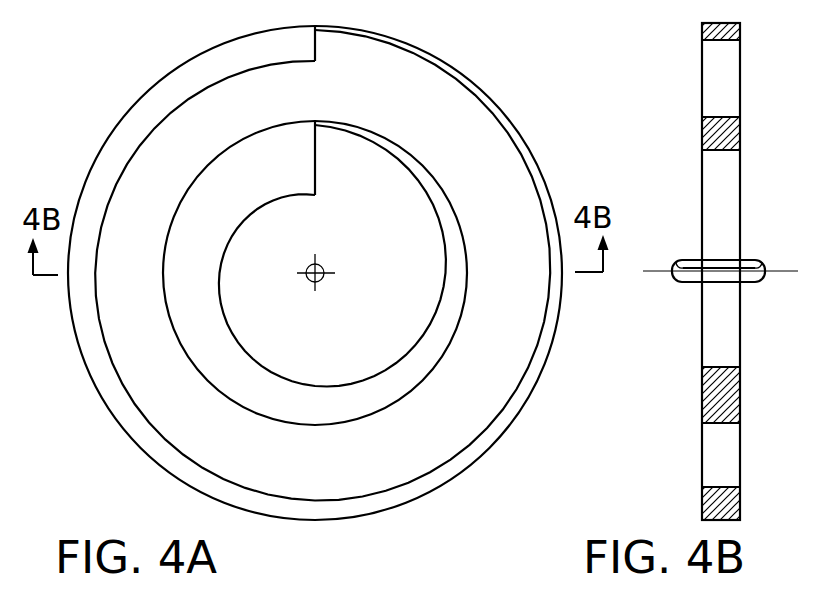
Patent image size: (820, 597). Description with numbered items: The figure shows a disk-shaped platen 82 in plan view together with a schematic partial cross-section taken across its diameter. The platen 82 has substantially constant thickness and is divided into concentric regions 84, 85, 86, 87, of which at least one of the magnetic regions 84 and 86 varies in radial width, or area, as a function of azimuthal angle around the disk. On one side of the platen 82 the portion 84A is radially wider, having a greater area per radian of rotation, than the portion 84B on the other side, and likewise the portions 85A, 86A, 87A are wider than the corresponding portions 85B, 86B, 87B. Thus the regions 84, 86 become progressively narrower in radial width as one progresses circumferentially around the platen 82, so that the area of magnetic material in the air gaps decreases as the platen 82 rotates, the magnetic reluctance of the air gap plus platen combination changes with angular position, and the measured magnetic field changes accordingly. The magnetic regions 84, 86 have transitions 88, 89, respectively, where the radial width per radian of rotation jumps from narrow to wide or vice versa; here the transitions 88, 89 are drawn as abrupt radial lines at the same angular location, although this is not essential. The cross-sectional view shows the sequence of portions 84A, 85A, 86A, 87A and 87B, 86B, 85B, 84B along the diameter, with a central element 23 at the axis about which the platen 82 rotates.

In FIG. 4A, the disk-shaped platen 82 is at (118, 88).
In FIG. 4B, the disk-shaped platen 82 is at (605, 105).
In FIG. 4A, the region 84 is at (492, 443).
In FIG. 4B, the region 84 is at (742, 30).
In FIG. 4A, the region 85 is at (490, 169).
In FIG. 4B, the region 85 is at (733, 79).
In FIG. 4A, the region 86 is at (275, 181).
In FIG. 4B, the region 86 is at (733, 134).
In FIG. 4A, the region 87 is at (409, 221).
In FIG. 4B, the region 87 is at (733, 324).
In FIG. 4A, the transition 88 is at (317, 47).
In FIG. 4A, the transition 89 is at (317, 176).
In FIG. 4A, the pin 23 is at (322, 267).
In FIG. 4B, the pin 23 is at (750, 262).
In FIG. 4A, the portion 84A is at (80, 275).
In FIG. 4B, the portion 84A is at (710, 499).
In FIG. 4A, the portion 84B is at (562, 273).
In FIG. 4B, the portion 84B is at (702, 29).
In FIG. 4A, the portion 85A is at (147, 287).
In FIG. 4B, the portion 85A is at (710, 448).
In FIG. 4A, the portion 85B is at (532, 287).
In FIG. 4B, the portion 85B is at (710, 80).
In FIG. 4A, the portion 86A is at (214, 287).
In FIG. 4B, the portion 86A is at (710, 384).
In FIG. 4A, the portion 86B is at (460, 272).
In FIG. 4B, the portion 86B is at (708, 132).
In FIG. 4A, the portion 87A is at (282, 287).
In FIG. 4B, the portion 87A is at (710, 322).
In FIG. 4A, the portion 87B is at (419, 287).
In FIG. 4B, the portion 87B is at (710, 220).